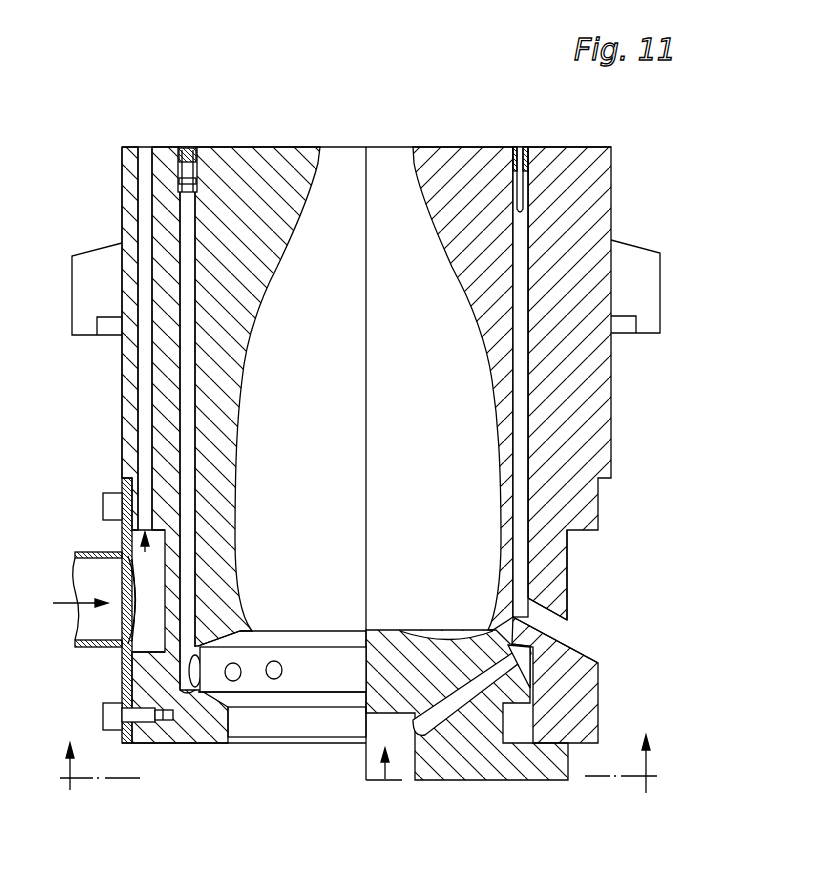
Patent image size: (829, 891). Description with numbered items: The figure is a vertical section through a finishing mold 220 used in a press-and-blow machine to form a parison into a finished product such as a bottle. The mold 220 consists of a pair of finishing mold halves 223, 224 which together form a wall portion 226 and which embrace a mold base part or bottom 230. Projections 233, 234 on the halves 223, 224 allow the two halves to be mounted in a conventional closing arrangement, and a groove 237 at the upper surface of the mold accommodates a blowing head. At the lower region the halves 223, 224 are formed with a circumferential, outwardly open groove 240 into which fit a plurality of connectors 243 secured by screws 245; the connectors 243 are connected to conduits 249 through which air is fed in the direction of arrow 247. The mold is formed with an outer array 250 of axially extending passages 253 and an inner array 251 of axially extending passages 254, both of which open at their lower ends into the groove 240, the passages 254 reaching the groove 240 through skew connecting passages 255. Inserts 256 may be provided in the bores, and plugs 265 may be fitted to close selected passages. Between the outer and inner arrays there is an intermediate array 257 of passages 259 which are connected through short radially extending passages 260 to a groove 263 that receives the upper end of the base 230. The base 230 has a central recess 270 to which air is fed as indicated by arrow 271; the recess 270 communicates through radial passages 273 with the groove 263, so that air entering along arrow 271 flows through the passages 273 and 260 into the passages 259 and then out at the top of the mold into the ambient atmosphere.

The mold 220 is at (108, 785).
The finishing mold half 223 is at (112, 412).
The finishing mold half 224 is at (620, 412).
The wall portion 226 is at (112, 232).
The mold base part or bottom 230 is at (490, 787).
The projection 233 is at (72, 316).
The projection 234 is at (638, 333).
The groove 237 is at (258, 151).
The circumferential outwardly open groove 240 is at (583, 566).
The connector 243 is at (124, 743).
The screw 245 is at (103, 507).
The arrow 247 is at (61, 604).
The conduit 249 is at (108, 648).
The outer array 250 is at (128, 572).
The inner array 251 is at (574, 635).
The axially extending passage 253 is at (150, 168).
The axially extending passage 254 is at (523, 440).
The skew connecting passage 255 is at (541, 615).
The insert 256 is at (524, 213).
The intermediate array 257 is at (208, 423).
The passage 259 is at (187, 470).
The radially extending passage 260 is at (275, 660).
The groove 263 is at (305, 672).
The plug 265 is at (186, 146).
The central recess 270 is at (373, 743).
The arrow 271 is at (380, 780).
The radial passage 273 is at (440, 725).